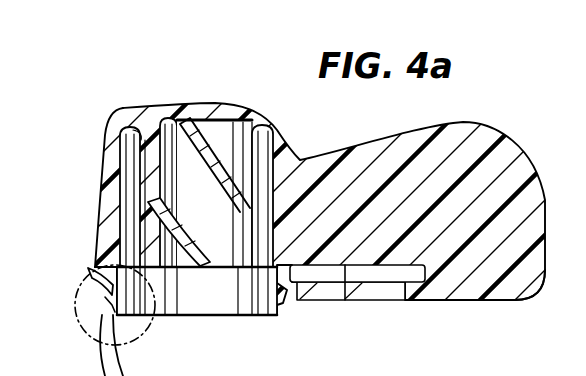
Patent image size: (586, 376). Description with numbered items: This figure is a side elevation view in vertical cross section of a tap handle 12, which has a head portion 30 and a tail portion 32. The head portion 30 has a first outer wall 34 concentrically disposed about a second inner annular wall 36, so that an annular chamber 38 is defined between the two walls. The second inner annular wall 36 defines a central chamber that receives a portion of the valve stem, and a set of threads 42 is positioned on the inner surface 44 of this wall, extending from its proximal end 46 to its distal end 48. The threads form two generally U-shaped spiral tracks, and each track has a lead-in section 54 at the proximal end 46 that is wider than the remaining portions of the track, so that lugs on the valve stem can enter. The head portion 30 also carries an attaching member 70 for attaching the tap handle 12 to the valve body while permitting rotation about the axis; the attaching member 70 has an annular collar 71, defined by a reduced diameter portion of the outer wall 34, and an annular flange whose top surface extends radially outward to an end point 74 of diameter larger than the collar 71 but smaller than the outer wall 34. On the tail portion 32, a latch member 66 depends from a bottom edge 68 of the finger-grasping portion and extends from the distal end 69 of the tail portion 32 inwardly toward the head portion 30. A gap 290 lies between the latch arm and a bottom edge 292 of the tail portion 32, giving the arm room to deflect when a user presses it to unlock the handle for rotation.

The tap handle 12 is at (472, 98).
The head portion 30 is at (100, 117).
The tail portion 32 is at (503, 150).
The first outer wall 34 is at (103, 193).
The second inner annular wall 36 is at (130, 136).
The annular chamber 38 is at (140, 238).
The set of threads 42 is at (210, 152).
The inner surface 44 is at (169, 119).
The proximal end 46 is at (146, 304).
The distal end 48 is at (255, 150).
The lead-in section 54 is at (198, 291).
The latch member 66 is at (388, 290).
The bottom edge 68 is at (448, 301).
The distal end 69 is at (499, 301).
The attaching member 70 is at (70, 319).
The annular collar 71 is at (87, 283).
The end point 74 is at (92, 288).
The gap 290 is at (371, 272).
The bottom edge 292 is at (349, 285).